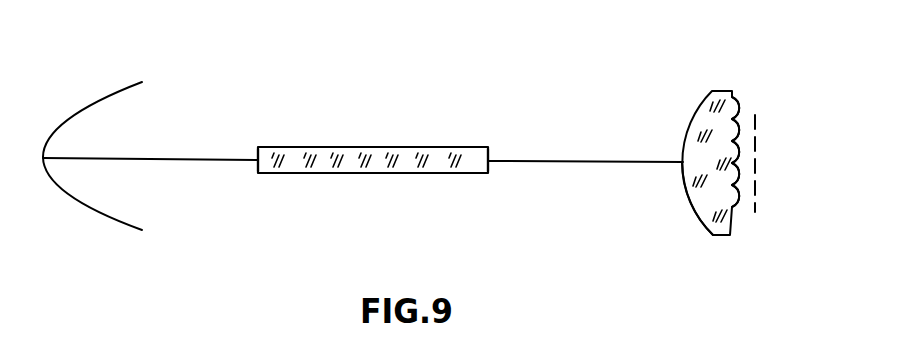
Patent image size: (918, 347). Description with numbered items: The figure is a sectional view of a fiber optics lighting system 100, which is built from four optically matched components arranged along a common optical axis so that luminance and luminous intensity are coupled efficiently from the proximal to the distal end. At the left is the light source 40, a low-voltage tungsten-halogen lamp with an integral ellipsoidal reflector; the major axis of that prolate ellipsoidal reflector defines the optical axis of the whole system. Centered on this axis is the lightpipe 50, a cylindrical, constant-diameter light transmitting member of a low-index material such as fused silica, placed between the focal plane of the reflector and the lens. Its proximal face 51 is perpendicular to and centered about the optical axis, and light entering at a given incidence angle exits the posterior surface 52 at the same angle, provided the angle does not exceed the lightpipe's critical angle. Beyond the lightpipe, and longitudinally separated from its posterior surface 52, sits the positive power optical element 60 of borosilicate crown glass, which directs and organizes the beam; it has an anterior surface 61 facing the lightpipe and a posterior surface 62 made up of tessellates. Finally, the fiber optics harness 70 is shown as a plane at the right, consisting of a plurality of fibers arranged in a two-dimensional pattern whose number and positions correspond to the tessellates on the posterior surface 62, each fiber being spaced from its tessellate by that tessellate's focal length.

The fiber optics lighting system 100 is at (391, 99).
The light source 40 is at (112, 91).
The lightpipe 50 is at (385, 174).
The proximal face 51 is at (257, 174).
The posterior surface 52 is at (489, 157).
The optical element 60 is at (712, 91).
The anterior surface 61 is at (700, 225).
The posterior surface 62 is at (742, 103).
The fiber optics harness 70 is at (757, 215).